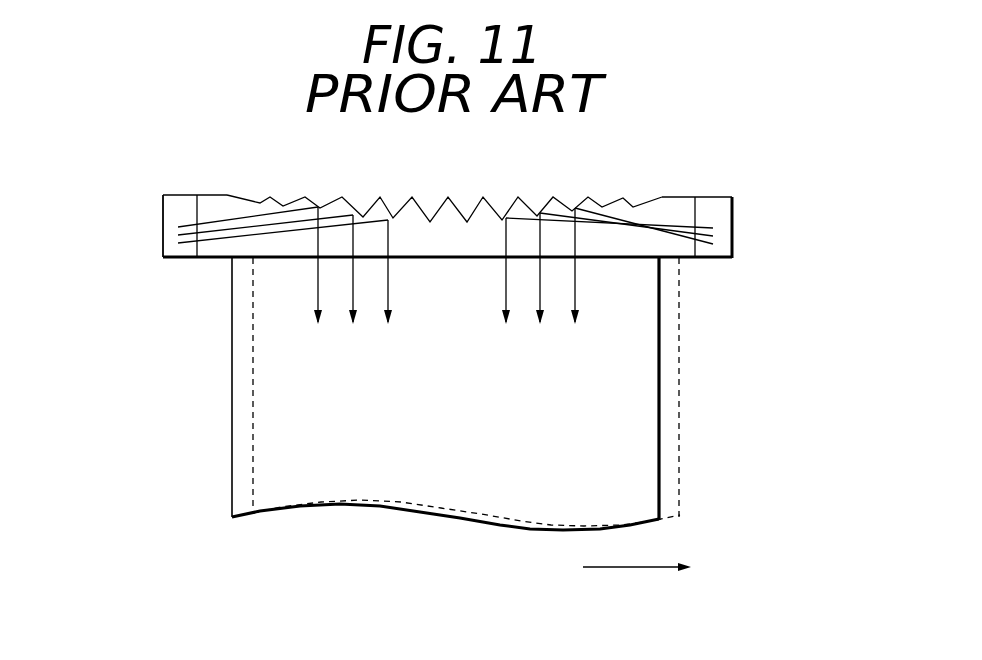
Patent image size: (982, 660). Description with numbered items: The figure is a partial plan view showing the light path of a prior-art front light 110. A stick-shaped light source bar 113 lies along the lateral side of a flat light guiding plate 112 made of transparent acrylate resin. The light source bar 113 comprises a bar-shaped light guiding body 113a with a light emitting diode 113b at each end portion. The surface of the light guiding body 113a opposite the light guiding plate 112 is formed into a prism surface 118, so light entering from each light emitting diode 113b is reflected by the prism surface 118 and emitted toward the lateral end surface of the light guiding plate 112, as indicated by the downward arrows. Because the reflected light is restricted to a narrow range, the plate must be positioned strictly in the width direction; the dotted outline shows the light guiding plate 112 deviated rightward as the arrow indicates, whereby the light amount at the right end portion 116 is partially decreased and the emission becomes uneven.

The front light 110 is at (454, 426).
The light guiding plate 112 is at (242, 407).
The light source bar 113 is at (458, 229).
The light guiding body 113a is at (213, 202).
The light emitting diode 113b is at (168, 223).
The right end portion 116 is at (664, 431).
The prism surface 118 is at (460, 208).